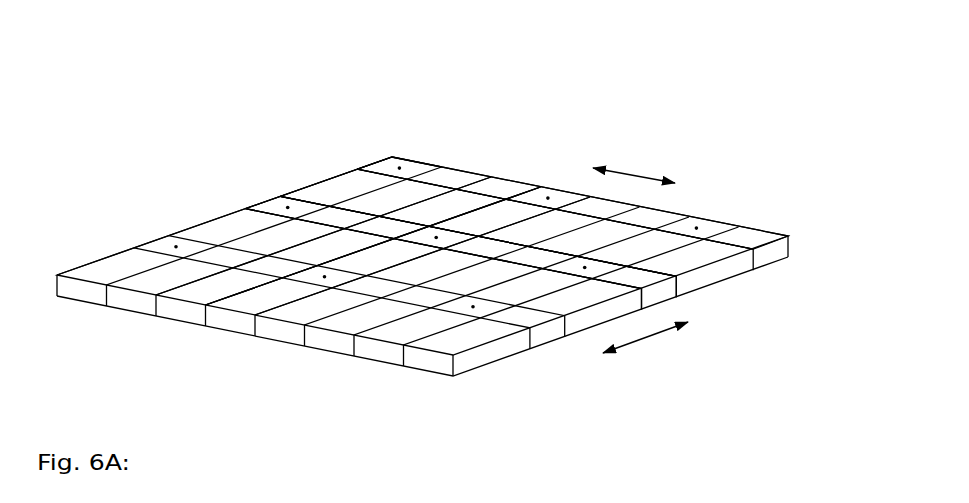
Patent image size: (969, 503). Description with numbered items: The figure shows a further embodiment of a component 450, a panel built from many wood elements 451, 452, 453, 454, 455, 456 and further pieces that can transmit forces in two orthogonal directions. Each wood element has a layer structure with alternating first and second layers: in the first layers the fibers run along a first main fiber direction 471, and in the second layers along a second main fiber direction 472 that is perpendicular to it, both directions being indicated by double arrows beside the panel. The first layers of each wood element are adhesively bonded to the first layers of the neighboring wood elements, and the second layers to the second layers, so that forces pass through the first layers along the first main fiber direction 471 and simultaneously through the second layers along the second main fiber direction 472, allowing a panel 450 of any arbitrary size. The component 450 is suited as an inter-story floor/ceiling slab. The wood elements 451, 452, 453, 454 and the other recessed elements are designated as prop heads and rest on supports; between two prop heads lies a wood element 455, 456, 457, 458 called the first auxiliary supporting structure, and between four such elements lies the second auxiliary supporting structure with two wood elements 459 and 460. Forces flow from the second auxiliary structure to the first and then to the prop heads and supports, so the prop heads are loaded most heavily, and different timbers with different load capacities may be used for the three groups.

The component 450 is at (577, 98).
The wood element 451 is at (380, 160).
The wood element 452 is at (268, 200).
The wood element 453 is at (555, 208).
The wood element 454 is at (418, 235).
The wood element 455 is at (323, 183).
The wood element 456 is at (495, 183).
The wood element 457 is at (503, 208).
The wood element 458 is at (355, 220).
The wood element 459 is at (454, 202).
The wood element 460 is at (412, 193).
The first main fiber direction 471 is at (657, 335).
The second main fiber direction 472 is at (646, 175).